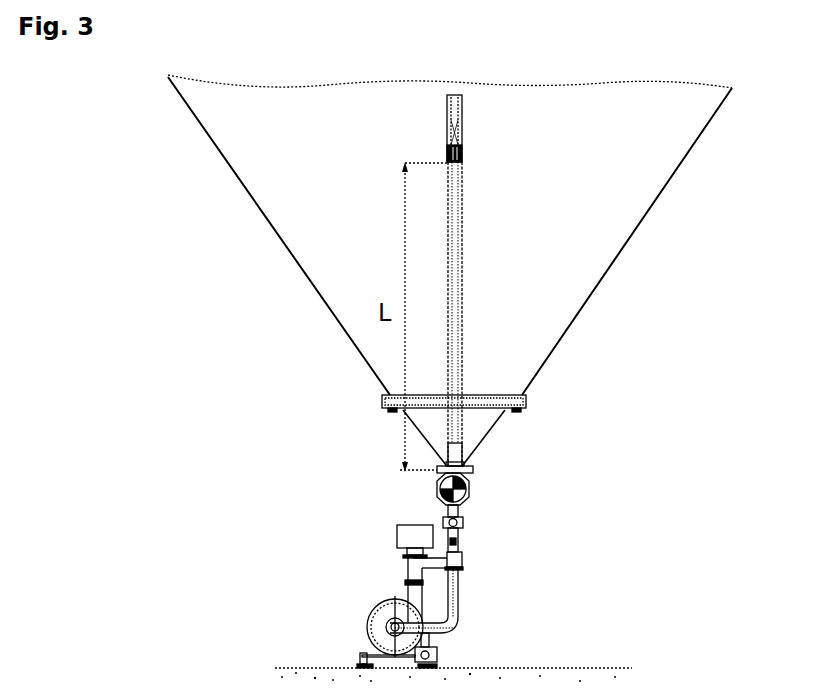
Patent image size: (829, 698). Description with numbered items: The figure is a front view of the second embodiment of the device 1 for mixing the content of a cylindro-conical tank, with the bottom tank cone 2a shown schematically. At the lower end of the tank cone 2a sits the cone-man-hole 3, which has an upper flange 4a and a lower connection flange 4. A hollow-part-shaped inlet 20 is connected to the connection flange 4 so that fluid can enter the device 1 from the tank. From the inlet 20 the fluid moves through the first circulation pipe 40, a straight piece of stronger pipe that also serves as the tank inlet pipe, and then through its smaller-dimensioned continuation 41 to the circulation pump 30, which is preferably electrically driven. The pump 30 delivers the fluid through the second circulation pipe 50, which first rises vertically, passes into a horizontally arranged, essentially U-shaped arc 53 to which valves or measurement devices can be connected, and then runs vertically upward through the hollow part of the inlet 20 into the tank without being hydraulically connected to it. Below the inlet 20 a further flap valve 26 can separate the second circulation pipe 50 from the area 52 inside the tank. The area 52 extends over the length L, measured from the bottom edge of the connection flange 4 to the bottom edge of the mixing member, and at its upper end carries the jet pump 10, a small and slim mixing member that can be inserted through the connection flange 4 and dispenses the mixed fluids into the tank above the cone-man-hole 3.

The device 1 is at (218, 293).
The tank cone 2a is at (593, 285).
The cone-man-hole 3 is at (480, 443).
The connection flange 4 is at (468, 467).
The upper flange 4a is at (382, 399).
The jet pump 10 is at (438, 126).
The inlet 20 is at (470, 487).
The flap valve 26 is at (465, 524).
The circulation pump 30 is at (385, 623).
The first circulation pipe 40 is at (457, 616).
The continuation of the first circulation pipe 41 is at (457, 616).
The second circulation pipe 50 is at (405, 580).
The area of the second circulation pipe 52 is at (462, 245).
The U-shaped arc 53 is at (440, 558).